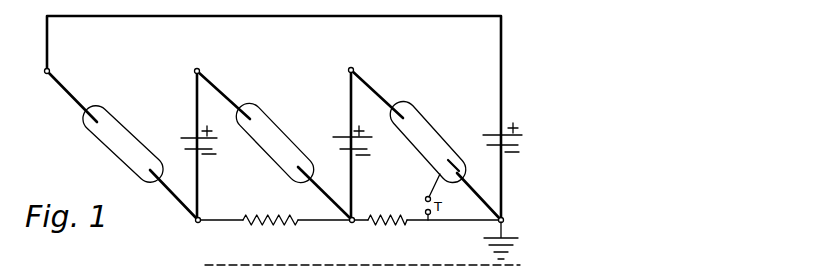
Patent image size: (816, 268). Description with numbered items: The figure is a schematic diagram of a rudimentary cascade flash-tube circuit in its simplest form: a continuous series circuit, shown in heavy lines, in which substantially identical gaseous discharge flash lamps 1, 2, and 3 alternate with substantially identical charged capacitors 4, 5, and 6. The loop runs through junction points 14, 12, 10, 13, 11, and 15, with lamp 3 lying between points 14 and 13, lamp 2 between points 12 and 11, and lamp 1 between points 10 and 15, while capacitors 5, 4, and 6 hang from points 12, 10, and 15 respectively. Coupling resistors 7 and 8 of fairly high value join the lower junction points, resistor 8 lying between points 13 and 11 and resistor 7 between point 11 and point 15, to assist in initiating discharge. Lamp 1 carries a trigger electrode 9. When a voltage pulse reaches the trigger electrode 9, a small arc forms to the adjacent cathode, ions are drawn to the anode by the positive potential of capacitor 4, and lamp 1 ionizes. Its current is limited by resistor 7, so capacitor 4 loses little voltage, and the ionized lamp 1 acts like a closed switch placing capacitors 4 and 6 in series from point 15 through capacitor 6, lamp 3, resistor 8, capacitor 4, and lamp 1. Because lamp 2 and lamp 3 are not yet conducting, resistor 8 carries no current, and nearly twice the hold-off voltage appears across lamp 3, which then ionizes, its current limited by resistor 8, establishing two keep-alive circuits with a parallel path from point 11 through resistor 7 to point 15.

The gaseous discharge flash lamp 1 is at (433, 131).
The gaseous discharge flash lamp 2 is at (285, 137).
The gaseous discharge flash lamp 3 is at (128, 131).
The charged capacitor 4 is at (370, 143).
The charged capacitor 5 is at (219, 143).
The charged capacitor 6 is at (525, 140).
The coupling resistor 7 is at (386, 212).
The coupling resistor 8 is at (277, 215).
The trigger electrode 9 is at (440, 172).
The circuit point 10 is at (338, 70).
The circuit point 11 is at (345, 237).
The circuit point 12 is at (185, 71).
The circuit point 13 is at (200, 237).
The circuit point 14 is at (35, 72).
The circuit point 15 is at (508, 235).